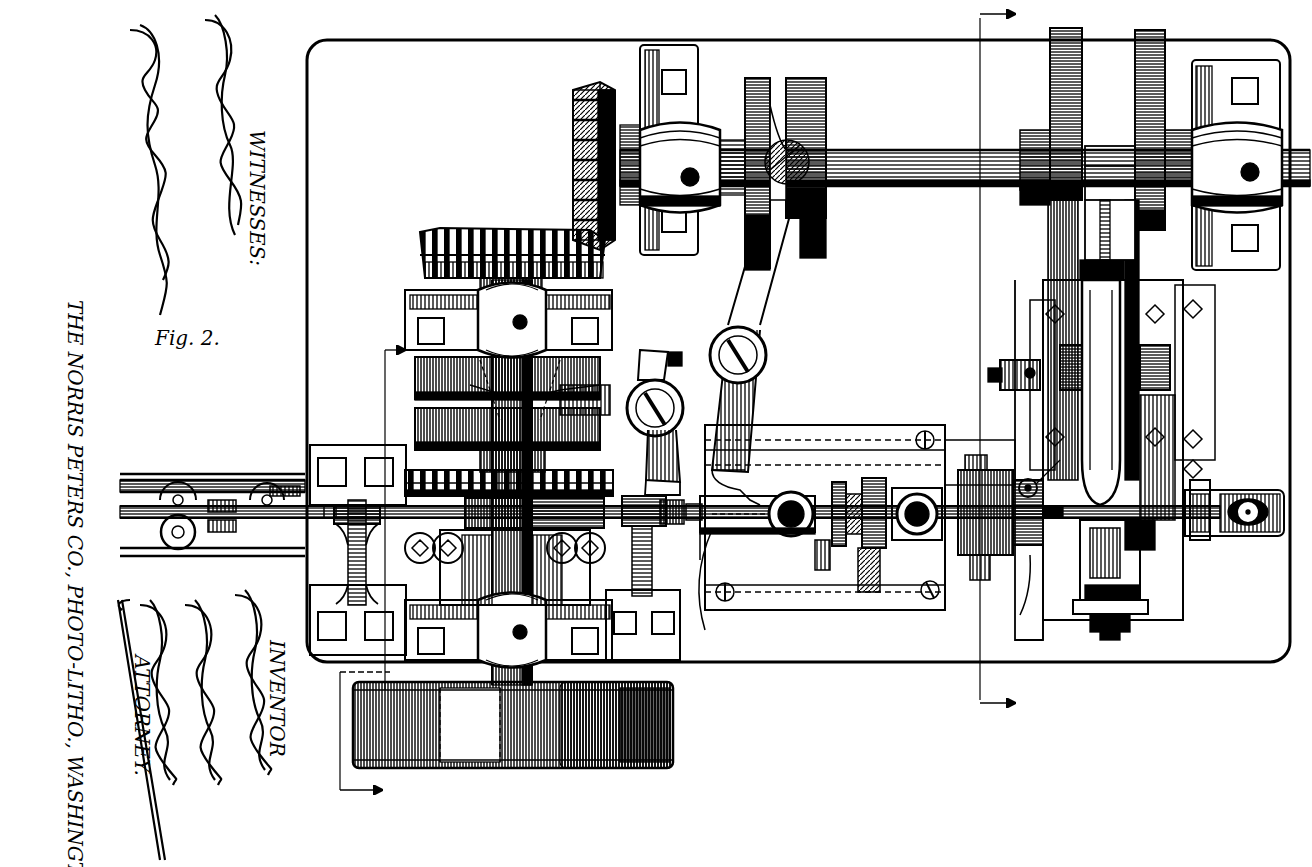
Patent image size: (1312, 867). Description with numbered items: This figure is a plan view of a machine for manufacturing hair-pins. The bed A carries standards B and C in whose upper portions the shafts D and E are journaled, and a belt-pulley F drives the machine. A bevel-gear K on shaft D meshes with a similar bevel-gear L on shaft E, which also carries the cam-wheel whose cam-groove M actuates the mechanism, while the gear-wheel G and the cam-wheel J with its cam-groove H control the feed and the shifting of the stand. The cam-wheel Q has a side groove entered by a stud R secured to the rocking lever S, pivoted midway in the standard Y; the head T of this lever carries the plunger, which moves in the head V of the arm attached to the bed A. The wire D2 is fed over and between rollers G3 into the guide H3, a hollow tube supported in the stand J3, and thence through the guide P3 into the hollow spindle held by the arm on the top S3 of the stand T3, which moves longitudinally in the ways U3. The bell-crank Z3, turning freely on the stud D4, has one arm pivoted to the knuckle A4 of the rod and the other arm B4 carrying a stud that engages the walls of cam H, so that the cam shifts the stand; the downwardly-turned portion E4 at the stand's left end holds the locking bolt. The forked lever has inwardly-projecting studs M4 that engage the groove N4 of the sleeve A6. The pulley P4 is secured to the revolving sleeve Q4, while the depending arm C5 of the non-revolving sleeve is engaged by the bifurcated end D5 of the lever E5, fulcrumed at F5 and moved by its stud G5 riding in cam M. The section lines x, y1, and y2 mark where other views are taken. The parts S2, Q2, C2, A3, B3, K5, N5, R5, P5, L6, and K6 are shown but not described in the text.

The bed A is at (798, 367).
The standard B is at (508, 482).
The standard C is at (951, 157).
The shaft D is at (530, 585).
The shaft E is at (965, 153).
The belt-pulley F is at (673, 697).
The gear-wheel G is at (420, 475).
The cam-groove H is at (452, 433).
The cam-wheel J is at (518, 461).
The bevel-gear K is at (445, 240).
The bevel-gear L is at (575, 170).
The cam-groove M is at (775, 105).
The cam-wheel Q is at (1140, 85).
The stud R is at (1130, 148).
The rocking lever S is at (1129, 410).
The head T is at (1140, 575).
The head V is at (1140, 600).
The standard Y is at (650, 482).
The section line x x is at (1002, 364).
The section line y' y' y1 is at (353, 731).
The section line y2 y2 is at (383, 513).
The gear wheel S2 is at (1062, 35).
The slide Q2 is at (1110, 242).
The clutch C2 is at (495, 400).
The wire D2 is at (120, 540).
The rollers G3 is at (268, 515).
The guide H3 is at (377, 525).
The stand J3 is at (355, 565).
The pin A3 is at (1040, 482).
The bearing bracket B3 is at (1180, 530).
The bolts K5 is at (604, 540).
The guide P3 is at (610, 498).
The bell-crank Z3 is at (676, 393).
The ways U3 is at (815, 438).
The stand T3 is at (745, 545).
The top S3 is at (835, 570).
The arm B4 is at (600, 402).
The stud D4 is at (652, 398).
The knuckle A4 is at (678, 530).
The downwardly-turned portion E4 is at (692, 549).
The groove N4 is at (952, 455).
The studs M4 is at (962, 468).
The pulley P4 is at (840, 484).
The sleeve Q4 is at (890, 505).
The cam groove N5 is at (810, 110).
The stud G5 is at (795, 160).
The lever E5 is at (765, 355).
The fulcrum F5 is at (748, 352).
The bifurcated end D5 is at (730, 480).
The slide block R5 is at (755, 510).
The depending arm C5 is at (711, 582).
The arm P5 is at (1040, 340).
The sleeve A6 is at (1005, 570).
The plate L6 is at (1030, 645).
The block K6 is at (1205, 540).